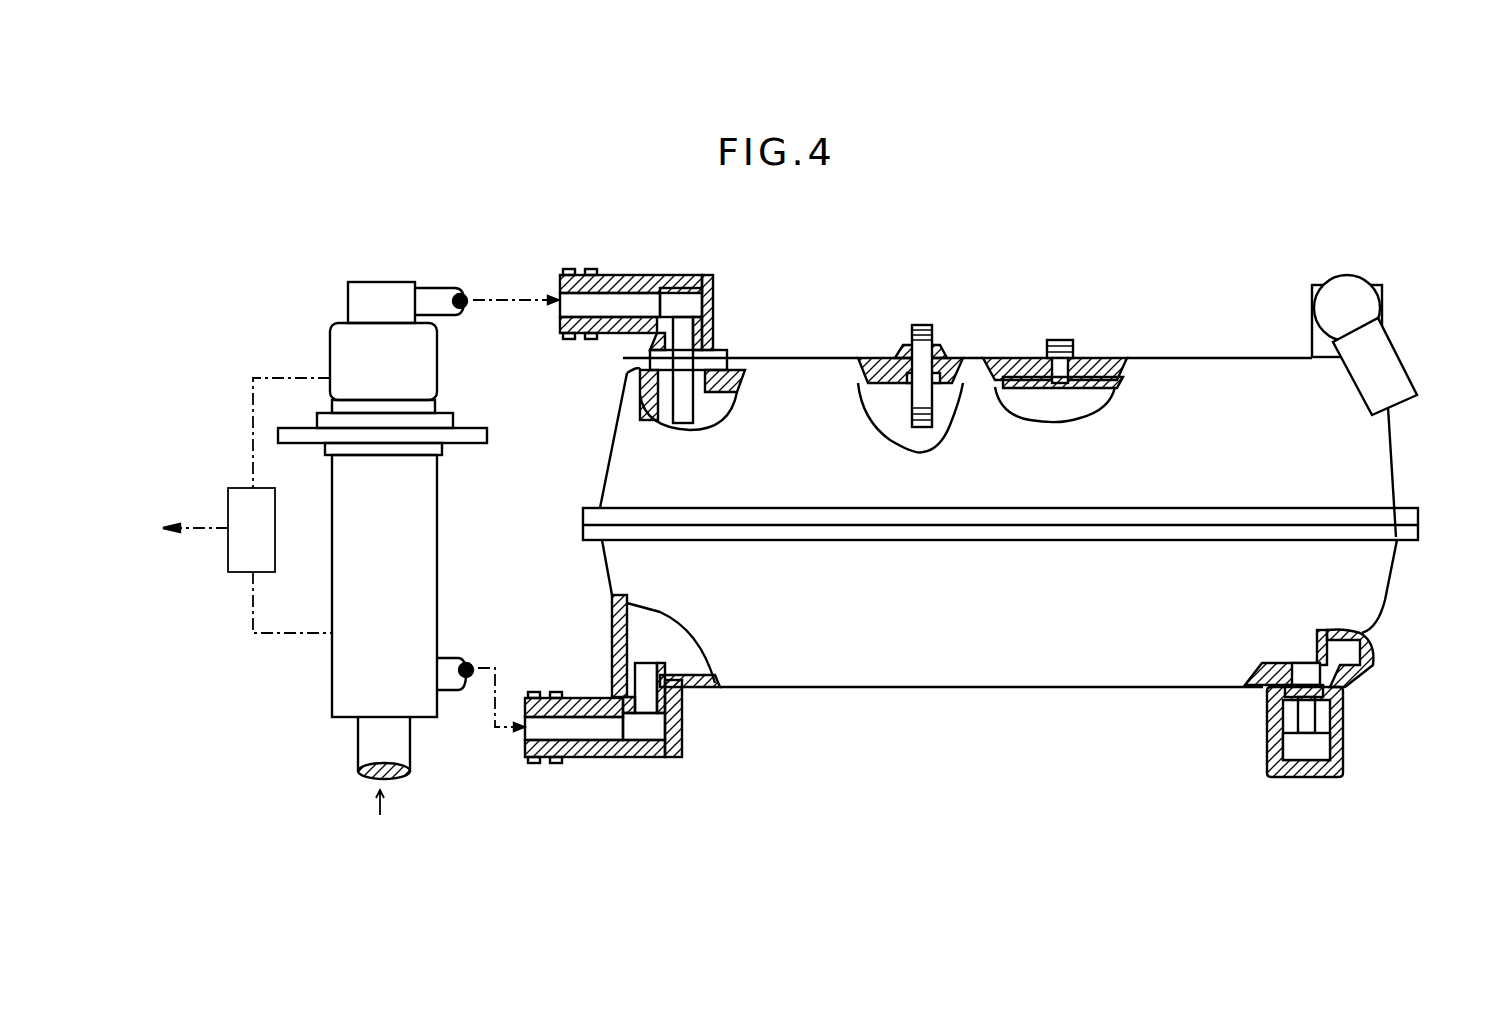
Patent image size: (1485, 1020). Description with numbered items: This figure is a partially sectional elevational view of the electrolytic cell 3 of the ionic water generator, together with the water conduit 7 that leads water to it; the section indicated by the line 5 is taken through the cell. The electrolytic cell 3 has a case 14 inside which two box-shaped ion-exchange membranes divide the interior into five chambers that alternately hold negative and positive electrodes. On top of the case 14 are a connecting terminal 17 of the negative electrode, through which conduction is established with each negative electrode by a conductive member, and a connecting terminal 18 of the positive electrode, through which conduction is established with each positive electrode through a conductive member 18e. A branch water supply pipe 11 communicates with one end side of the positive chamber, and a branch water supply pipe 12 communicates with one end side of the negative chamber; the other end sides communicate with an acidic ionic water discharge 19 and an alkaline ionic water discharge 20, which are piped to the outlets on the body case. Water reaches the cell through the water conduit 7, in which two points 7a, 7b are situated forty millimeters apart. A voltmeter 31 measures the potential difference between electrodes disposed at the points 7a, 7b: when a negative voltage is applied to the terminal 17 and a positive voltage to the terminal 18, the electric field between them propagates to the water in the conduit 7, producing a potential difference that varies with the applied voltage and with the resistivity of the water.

The electrolytic cell 3 is at (828, 684).
The section line V-V 5 is at (922, 224).
The water conduit 7 is at (435, 532).
The point in the water conduit 7a is at (330, 377).
The point in the water conduit 7b is at (333, 636).
The branch water supply pipe 11 is at (630, 277).
The branch water supply pipe 12 is at (612, 760).
The case 14 is at (1378, 668).
The connecting terminal of the negative electrode 17 is at (925, 325).
The connecting terminal of the positive electrode 18 is at (1060, 340).
The conductive member 18e is at (1095, 392).
The acidic ionic water discharge 19 is at (1320, 745).
The alkaline ionic water discharge 20 is at (1395, 365).
The voltmeter 31 is at (240, 573).